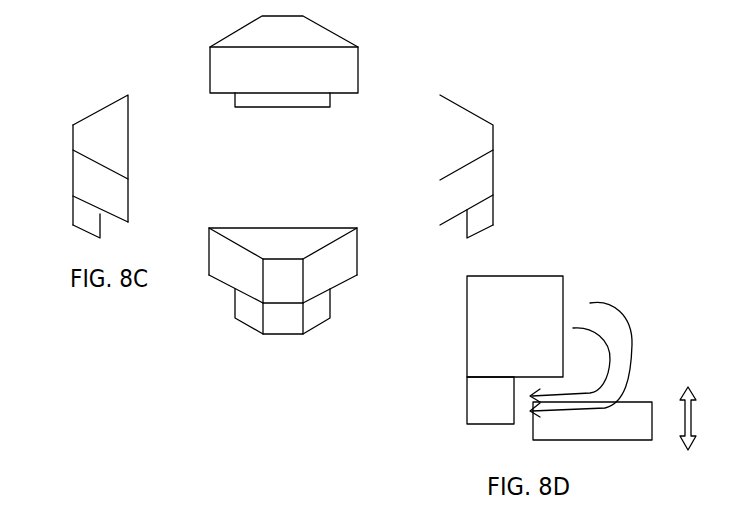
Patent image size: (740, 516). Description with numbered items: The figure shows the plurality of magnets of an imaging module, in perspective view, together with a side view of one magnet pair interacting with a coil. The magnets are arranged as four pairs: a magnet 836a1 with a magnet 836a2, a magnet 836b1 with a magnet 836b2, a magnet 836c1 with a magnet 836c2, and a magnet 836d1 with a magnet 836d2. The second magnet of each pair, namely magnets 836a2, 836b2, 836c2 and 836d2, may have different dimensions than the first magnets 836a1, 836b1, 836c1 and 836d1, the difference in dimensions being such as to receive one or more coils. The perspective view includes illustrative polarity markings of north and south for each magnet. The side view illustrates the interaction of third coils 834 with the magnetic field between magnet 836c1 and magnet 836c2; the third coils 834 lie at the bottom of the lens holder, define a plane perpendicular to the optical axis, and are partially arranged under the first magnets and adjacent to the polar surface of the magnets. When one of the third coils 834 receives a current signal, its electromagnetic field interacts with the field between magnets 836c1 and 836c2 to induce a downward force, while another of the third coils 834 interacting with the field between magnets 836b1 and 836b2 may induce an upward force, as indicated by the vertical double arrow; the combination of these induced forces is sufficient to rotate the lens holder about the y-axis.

In FIG. 8C, the magnet 836a1 is at (284, 64).
In FIG. 8C, the magnet 836a2 is at (323, 115).
In FIG. 8C, the magnet 836b1 is at (485, 166).
In FIG. 8C, the magnet 836b2 is at (529, 195).
In FIG. 8C, the magnet 836c1 is at (120, 166).
In FIG. 8D, the magnet 836c1 is at (565, 317).
In FIG. 8C, the magnet 836c2 is at (126, 235).
In FIG. 8D, the magnet 836c2 is at (453, 419).
In FIG. 8C, the magnet 836d1 is at (291, 248).
In FIG. 8C, the magnet 836d2 is at (328, 310).
In FIG. 8D, the third coils 834 is at (616, 449).